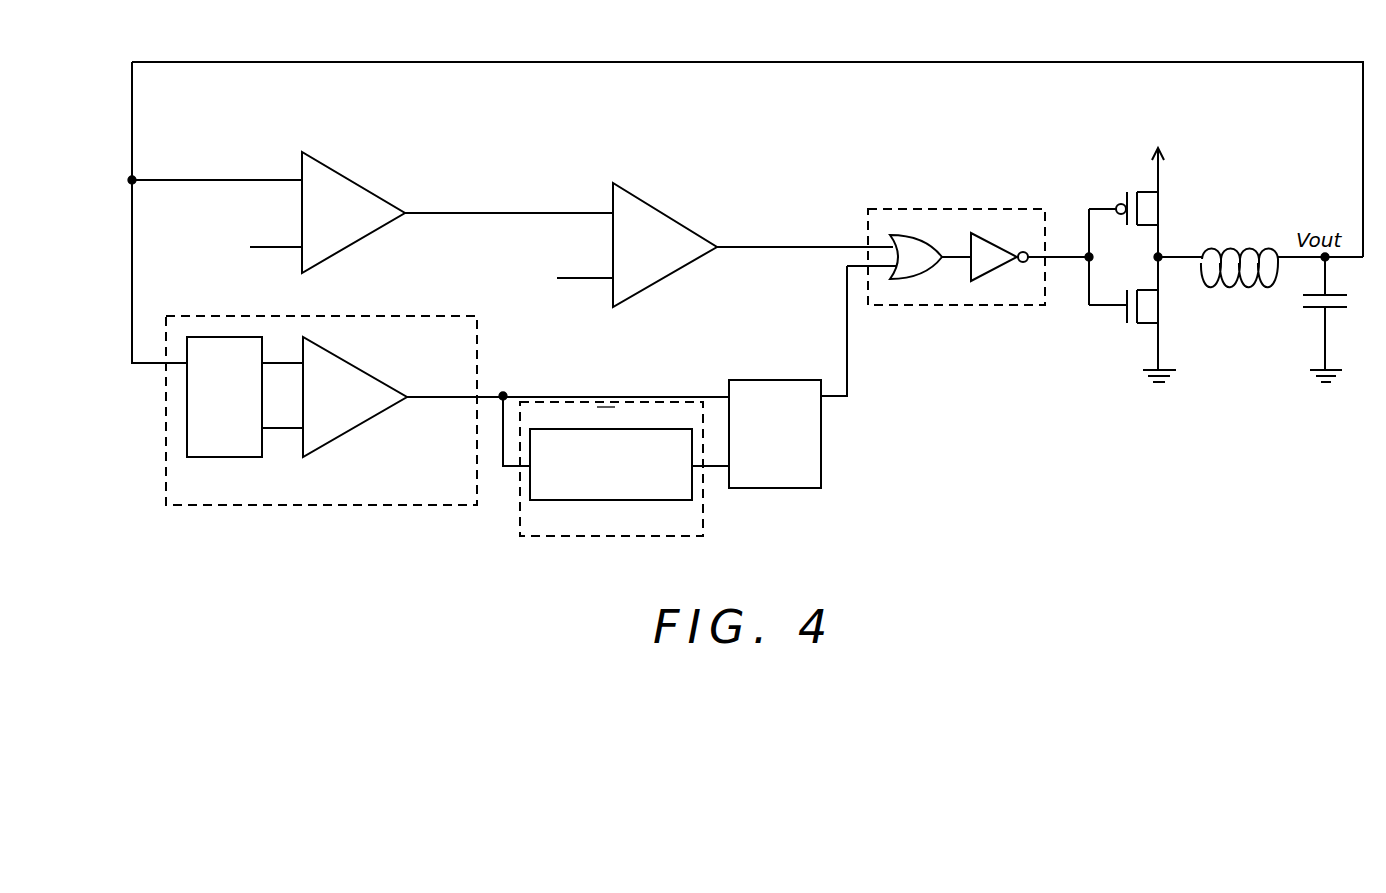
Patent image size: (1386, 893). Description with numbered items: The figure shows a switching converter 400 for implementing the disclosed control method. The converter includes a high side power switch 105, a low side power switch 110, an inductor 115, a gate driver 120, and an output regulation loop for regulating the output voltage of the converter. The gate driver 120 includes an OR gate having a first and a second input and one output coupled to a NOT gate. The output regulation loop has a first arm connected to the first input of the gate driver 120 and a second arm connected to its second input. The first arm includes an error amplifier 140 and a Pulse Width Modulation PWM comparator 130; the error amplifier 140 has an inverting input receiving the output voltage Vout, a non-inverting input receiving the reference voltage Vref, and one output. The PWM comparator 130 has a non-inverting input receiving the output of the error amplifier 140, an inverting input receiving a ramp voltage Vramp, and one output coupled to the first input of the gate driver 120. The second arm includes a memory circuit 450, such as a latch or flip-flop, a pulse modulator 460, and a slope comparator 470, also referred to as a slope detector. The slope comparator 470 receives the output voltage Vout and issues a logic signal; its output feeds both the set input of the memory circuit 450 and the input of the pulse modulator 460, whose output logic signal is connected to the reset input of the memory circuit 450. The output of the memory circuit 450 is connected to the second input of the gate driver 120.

The switching converter 400 is at (237, 36).
The error amplifier 140 is at (372, 192).
The Pulse Width Modulation PWM comparator 130 is at (685, 222).
The gate driver 120 is at (978, 208).
The high side power switch 105 is at (1123, 196).
The low side power switch 110 is at (1122, 320).
The inductor 115 is at (1250, 252).
The memory circuit 450 is at (768, 490).
The pulse modulator 460 is at (558, 538).
The slope comparator 470 is at (388, 507).